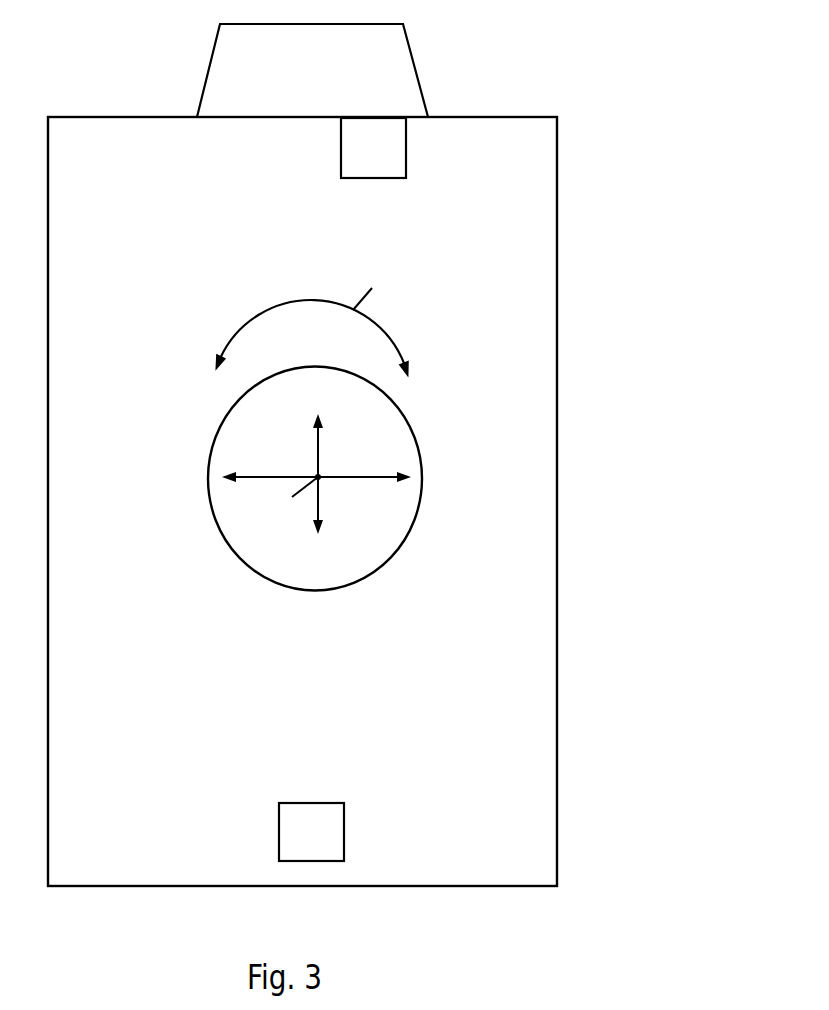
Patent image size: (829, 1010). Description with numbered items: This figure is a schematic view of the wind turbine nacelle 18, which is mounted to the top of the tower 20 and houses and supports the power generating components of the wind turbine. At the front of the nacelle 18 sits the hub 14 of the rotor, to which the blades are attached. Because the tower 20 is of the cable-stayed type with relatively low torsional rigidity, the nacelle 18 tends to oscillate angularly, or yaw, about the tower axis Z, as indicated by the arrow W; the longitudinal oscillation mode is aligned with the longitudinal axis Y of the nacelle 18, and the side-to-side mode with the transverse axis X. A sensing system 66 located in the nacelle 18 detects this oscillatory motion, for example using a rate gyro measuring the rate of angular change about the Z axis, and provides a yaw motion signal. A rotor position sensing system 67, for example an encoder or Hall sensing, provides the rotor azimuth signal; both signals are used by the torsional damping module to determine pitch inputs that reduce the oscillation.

The hub 14 is at (413, 58).
The nacelle 18 is at (562, 637).
The tower 20 is at (392, 557).
The sensing system 66 is at (319, 843).
The rotor position sensing system 67 is at (381, 162).